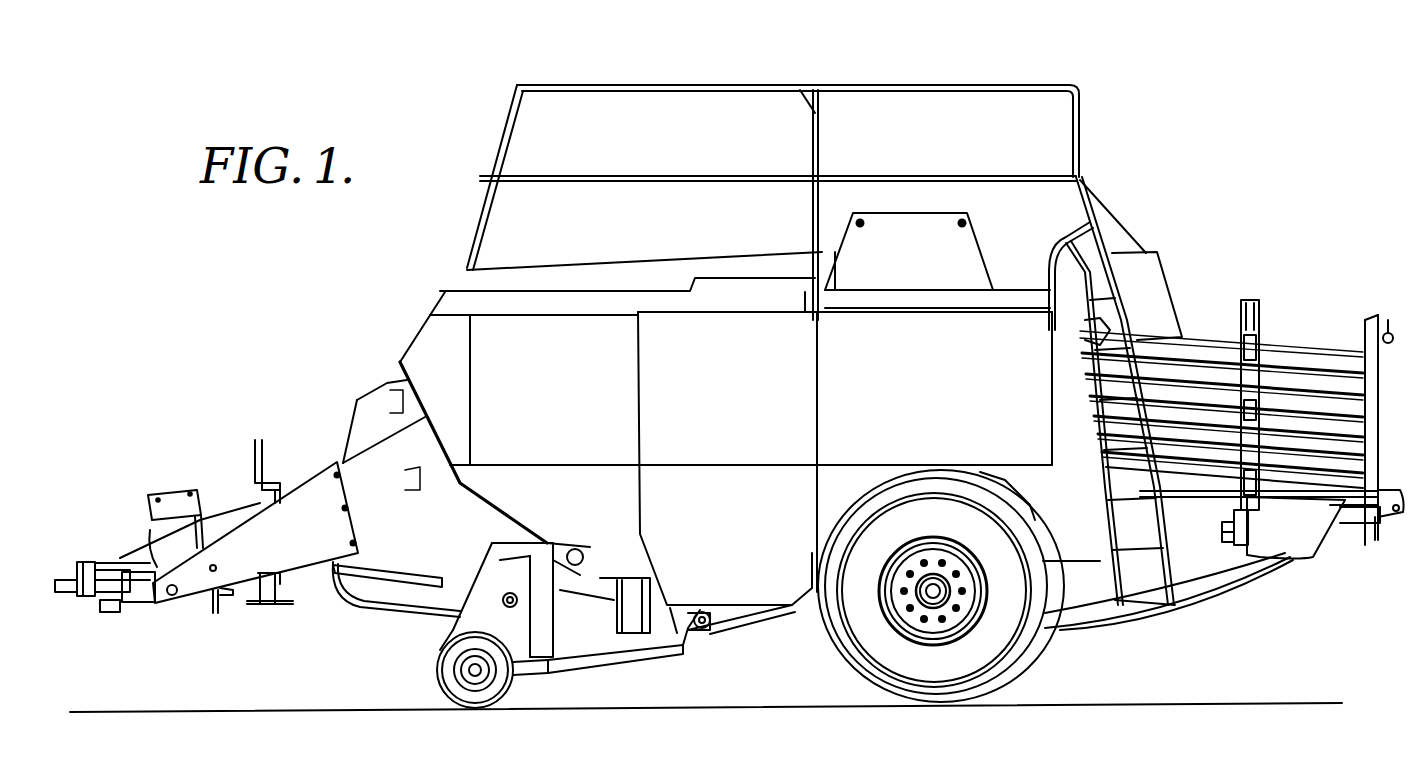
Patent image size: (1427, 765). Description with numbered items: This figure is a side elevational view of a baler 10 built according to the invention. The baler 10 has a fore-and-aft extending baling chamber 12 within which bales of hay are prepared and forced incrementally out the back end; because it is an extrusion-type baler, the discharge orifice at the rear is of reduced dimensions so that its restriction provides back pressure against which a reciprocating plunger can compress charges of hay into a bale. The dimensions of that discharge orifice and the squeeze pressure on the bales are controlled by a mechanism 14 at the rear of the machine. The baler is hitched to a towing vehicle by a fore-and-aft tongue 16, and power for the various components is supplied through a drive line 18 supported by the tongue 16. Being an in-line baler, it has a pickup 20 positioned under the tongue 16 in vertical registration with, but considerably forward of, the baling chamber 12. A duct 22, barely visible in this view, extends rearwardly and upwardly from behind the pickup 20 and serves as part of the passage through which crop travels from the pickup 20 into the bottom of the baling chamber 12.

The baler 10 is at (1192, 180).
The baling chamber 12 is at (1187, 378).
The squeeze pressure control mechanism 14 is at (1257, 315).
The tongue 16 is at (312, 495).
The drive line 18 is at (118, 572).
The pickup 20 is at (413, 654).
The duct 22 is at (732, 628).